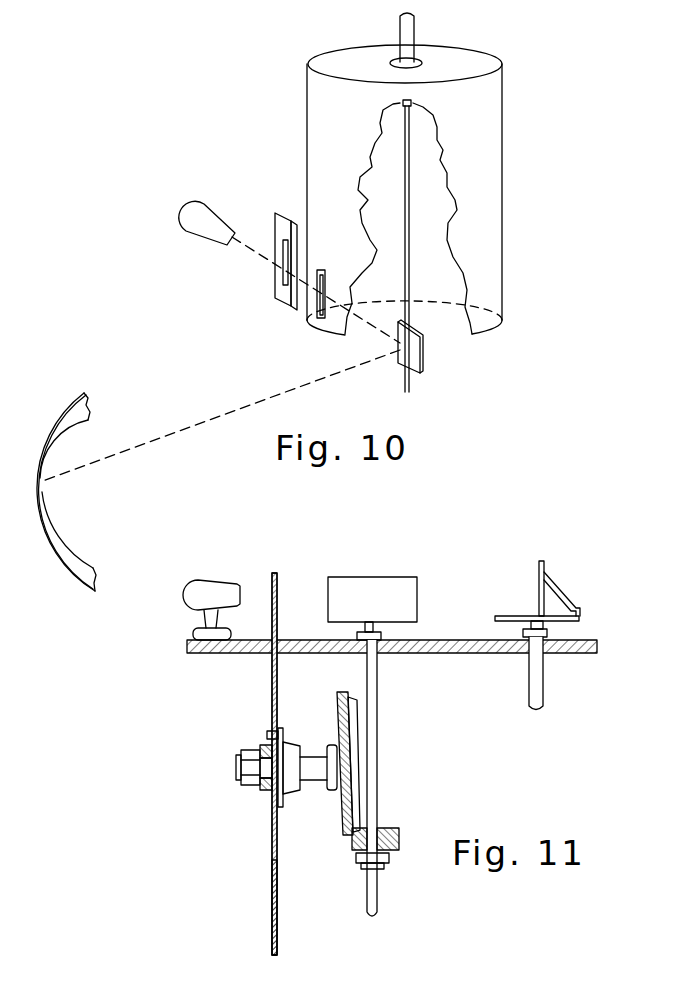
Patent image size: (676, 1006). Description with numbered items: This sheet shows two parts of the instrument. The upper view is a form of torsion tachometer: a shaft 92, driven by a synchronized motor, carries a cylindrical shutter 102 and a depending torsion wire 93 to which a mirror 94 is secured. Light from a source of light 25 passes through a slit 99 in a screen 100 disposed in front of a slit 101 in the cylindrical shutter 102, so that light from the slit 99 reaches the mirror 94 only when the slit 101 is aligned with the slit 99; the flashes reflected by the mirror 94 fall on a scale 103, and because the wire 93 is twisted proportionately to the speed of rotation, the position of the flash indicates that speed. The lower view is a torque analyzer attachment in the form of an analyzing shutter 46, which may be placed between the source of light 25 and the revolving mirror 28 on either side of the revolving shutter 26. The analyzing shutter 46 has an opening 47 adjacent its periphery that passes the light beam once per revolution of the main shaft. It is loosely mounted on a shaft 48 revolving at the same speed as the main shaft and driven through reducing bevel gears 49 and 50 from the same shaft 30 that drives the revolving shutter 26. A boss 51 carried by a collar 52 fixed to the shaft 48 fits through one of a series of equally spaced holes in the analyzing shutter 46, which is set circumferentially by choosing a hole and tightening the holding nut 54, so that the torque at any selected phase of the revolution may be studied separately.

In FIG. 10, the source of light 25 is at (207, 223).
In FIG. 11, the source of light 25 is at (207, 585).
In FIG. 11, the revolving shutter 26 is at (408, 601).
In FIG. 11, the revolving mirror 28 is at (546, 566).
In FIG. 11, the rotatable shaft 30 is at (378, 896).
In FIG. 11, the analyzing shutter 46 is at (278, 906).
In FIG. 11, the opening 47 is at (278, 601).
In FIG. 11, the shaft 48 is at (311, 755).
In FIG. 11, the reducing bevel gear 49 is at (340, 820).
In FIG. 11, the reducing bevel gear 50 is at (356, 838).
In FIG. 11, the boss 51 is at (269, 734).
In FIG. 11, the collar 52 is at (280, 733).
In FIG. 11, the holding nut 54 is at (243, 774).
In FIG. 10, the shaft 92 is at (411, 28).
In FIG. 10, the torsion wire 93 is at (410, 233).
In FIG. 10, the mirror 94 is at (420, 356).
In FIG. 10, the slit 99 is at (284, 284).
In FIG. 10, the screen 100 is at (283, 223).
In FIG. 10, the slit 101 is at (326, 286).
In FIG. 10, the cylindrical shutter 102 is at (495, 166).
In FIG. 10, the scale 103 is at (70, 429).